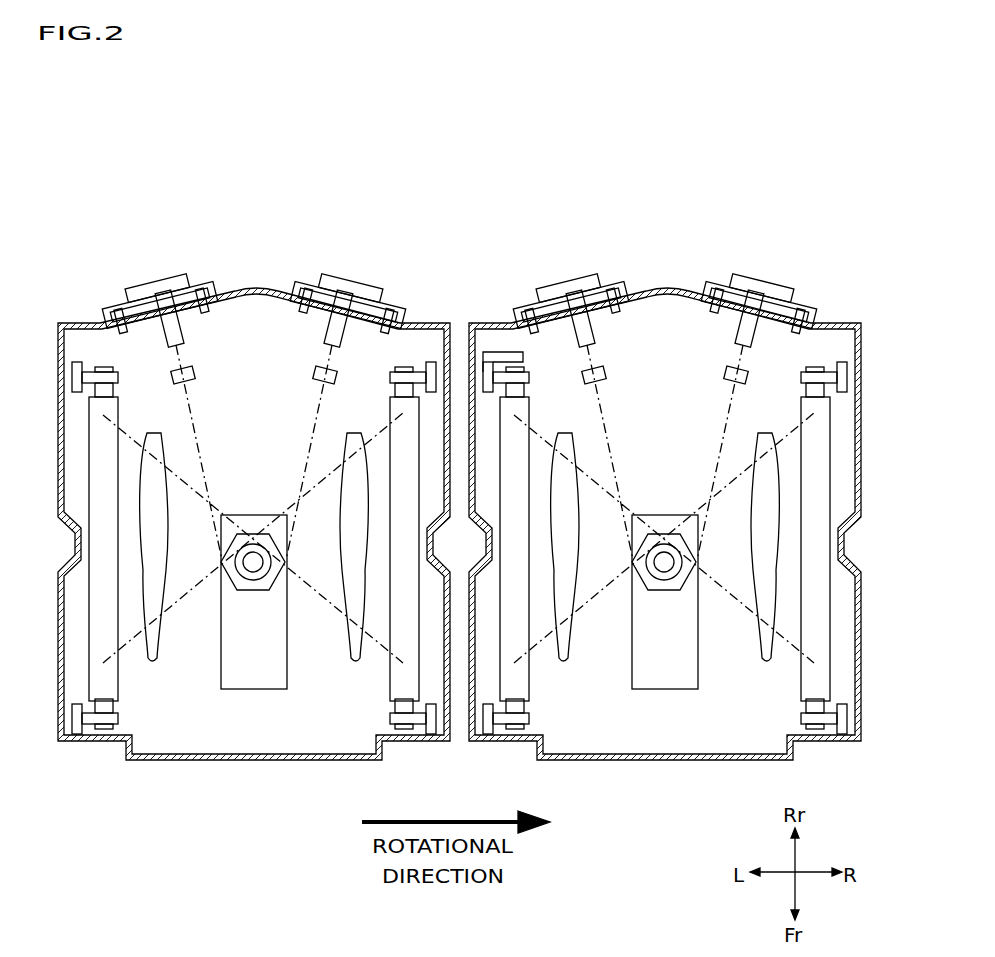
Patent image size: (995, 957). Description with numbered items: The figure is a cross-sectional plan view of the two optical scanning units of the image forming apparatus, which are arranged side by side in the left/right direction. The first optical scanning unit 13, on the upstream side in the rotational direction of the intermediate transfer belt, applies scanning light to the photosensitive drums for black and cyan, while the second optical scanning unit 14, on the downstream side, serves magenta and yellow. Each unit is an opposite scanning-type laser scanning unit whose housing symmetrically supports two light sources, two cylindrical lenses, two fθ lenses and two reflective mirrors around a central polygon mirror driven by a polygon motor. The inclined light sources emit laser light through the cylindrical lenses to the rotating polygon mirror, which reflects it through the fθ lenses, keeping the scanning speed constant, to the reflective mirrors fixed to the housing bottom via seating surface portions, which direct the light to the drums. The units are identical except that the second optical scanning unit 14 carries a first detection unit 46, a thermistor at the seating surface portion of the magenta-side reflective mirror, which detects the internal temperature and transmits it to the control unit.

The first optical scanning unit 13 is at (222, 247).
The second optical scanning unit 14 is at (665, 473).
The first detection unit 46 is at (534, 359).